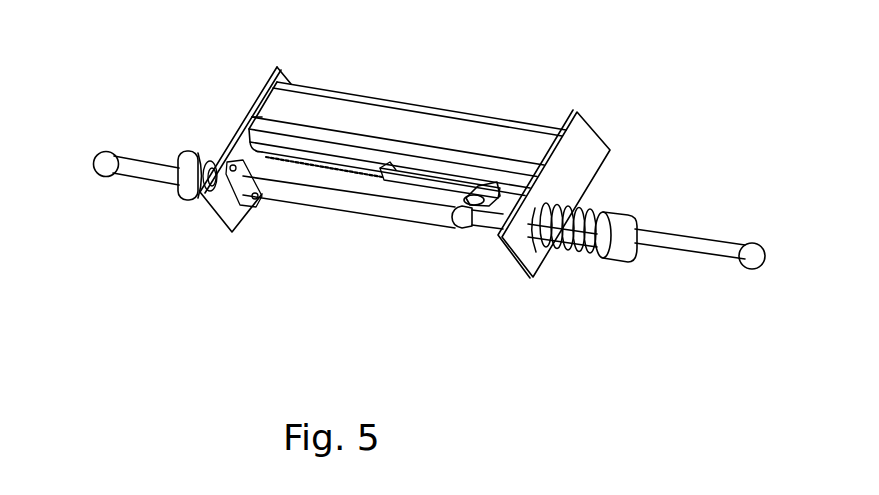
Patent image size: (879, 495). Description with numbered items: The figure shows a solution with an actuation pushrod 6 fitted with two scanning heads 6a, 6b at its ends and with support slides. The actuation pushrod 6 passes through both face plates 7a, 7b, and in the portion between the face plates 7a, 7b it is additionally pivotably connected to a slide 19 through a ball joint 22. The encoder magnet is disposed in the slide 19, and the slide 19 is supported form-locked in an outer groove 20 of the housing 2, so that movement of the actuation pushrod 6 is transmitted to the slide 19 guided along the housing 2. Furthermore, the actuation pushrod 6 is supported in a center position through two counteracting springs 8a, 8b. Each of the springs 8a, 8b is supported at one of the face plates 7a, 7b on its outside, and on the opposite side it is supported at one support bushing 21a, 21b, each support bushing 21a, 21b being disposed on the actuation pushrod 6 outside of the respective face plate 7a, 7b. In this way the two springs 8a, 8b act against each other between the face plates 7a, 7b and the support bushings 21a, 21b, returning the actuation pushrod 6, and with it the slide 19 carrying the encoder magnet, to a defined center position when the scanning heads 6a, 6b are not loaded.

The housing 2 is at (486, 110).
The actuation pushrod 6 is at (134, 183).
The scanning head 6a is at (102, 146).
The scanning head 6b is at (758, 272).
The face plate 7a is at (264, 63).
The face plate 7b is at (608, 146).
The spring 8a is at (208, 153).
The spring 8b is at (580, 254).
The slide 19 is at (438, 166).
The outer groove 20 is at (329, 158).
The support bushing 21a is at (188, 206).
The support bushing 21b is at (605, 264).
The ball joint 22 is at (457, 237).